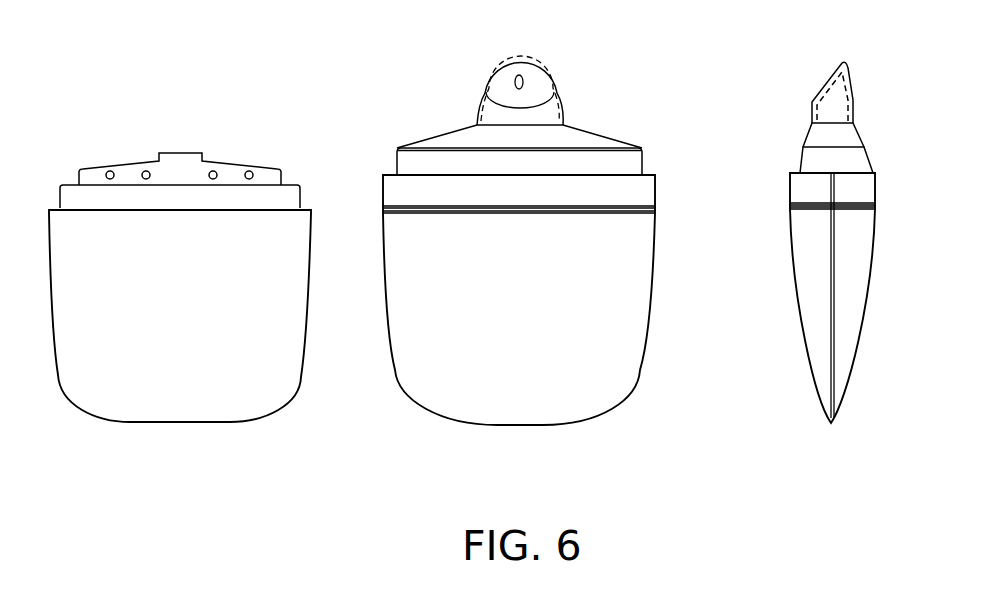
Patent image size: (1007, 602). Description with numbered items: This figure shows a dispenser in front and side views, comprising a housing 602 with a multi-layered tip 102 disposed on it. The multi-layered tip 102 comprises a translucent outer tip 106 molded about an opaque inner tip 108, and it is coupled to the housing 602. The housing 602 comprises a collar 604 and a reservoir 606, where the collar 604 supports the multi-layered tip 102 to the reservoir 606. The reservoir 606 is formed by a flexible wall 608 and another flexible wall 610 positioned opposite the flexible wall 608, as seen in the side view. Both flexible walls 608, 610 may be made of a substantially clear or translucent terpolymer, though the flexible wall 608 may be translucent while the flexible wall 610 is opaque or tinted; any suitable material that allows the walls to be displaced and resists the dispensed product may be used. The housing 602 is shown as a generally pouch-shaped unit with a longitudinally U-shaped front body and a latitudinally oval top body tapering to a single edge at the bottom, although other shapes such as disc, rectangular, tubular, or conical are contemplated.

The multi-layered tip 102 is at (545, 70).
The translucent outer tip 106 is at (484, 90).
The opaque inner tip 108 is at (481, 112).
The housing 602 is at (638, 138).
The collar 604 is at (644, 158).
The reservoir 606 is at (313, 238).
The flexible wall 608 is at (288, 307).
The flexible wall 610 is at (875, 240).